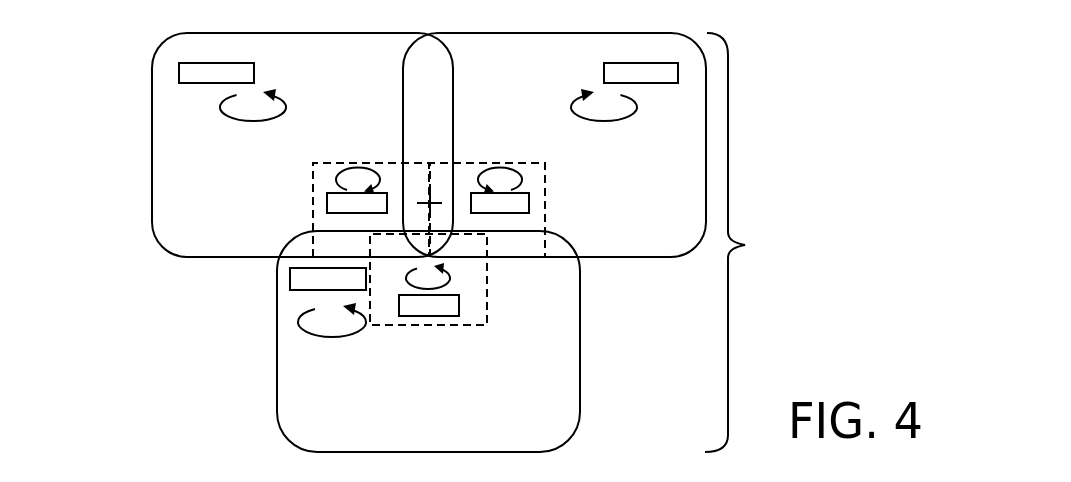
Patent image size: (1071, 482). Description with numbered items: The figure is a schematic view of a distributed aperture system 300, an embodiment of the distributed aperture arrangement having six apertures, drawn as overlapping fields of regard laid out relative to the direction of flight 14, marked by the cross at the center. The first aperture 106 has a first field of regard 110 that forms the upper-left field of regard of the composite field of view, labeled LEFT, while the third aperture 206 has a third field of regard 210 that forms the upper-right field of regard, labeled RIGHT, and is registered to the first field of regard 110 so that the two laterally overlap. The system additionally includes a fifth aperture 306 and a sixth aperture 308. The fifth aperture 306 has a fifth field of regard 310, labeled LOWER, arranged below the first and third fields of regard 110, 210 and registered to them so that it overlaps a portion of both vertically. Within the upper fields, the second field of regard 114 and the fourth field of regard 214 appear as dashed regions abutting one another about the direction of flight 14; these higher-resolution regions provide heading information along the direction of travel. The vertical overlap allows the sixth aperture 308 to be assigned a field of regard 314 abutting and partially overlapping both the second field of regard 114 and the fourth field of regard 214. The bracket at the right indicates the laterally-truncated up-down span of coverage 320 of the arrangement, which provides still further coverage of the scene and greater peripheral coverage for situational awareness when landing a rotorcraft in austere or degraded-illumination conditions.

The direction of flight 14 is at (431, 203).
The first aperture 106 is at (193, 83).
The first field of regard 110 is at (152, 172).
The second field of regard 114 is at (343, 163).
The third aperture 206 is at (624, 60).
The third field of regard 210 is at (653, 32).
The fourth field of regard 214 is at (545, 190).
The distributed aperture system 300 is at (108, 450).
The fifth aperture 306 is at (307, 290).
The sixth aperture 308 is at (428, 316).
The fifth field of regard 310 is at (580, 333).
The field of regard of the sixth aperture 314 is at (487, 297).
The up-down span of coverage 320 is at (748, 242).